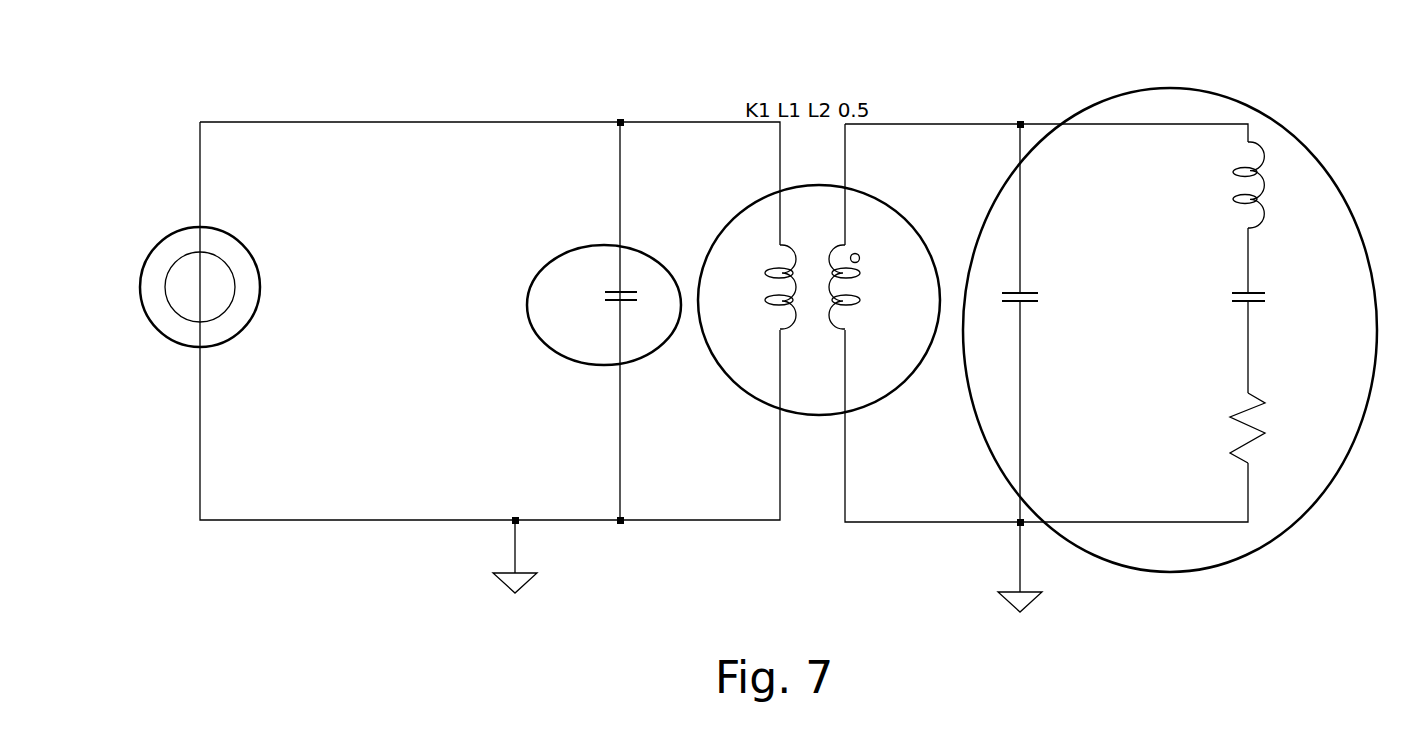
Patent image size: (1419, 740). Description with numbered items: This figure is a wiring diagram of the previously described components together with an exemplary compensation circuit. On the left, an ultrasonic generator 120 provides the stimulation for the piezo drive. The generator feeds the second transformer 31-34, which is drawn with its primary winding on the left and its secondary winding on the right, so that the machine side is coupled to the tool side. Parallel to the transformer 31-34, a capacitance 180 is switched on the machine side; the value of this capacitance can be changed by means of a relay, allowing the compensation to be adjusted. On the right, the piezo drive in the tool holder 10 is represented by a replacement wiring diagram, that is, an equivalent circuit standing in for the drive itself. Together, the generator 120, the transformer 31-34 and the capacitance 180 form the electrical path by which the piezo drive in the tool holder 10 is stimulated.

The tool holder 10 is at (1178, 85).
The ultrasonic generator 120 is at (192, 228).
The capacitance 180 is at (598, 245).
The second transformer 31-34 is at (887, 197).